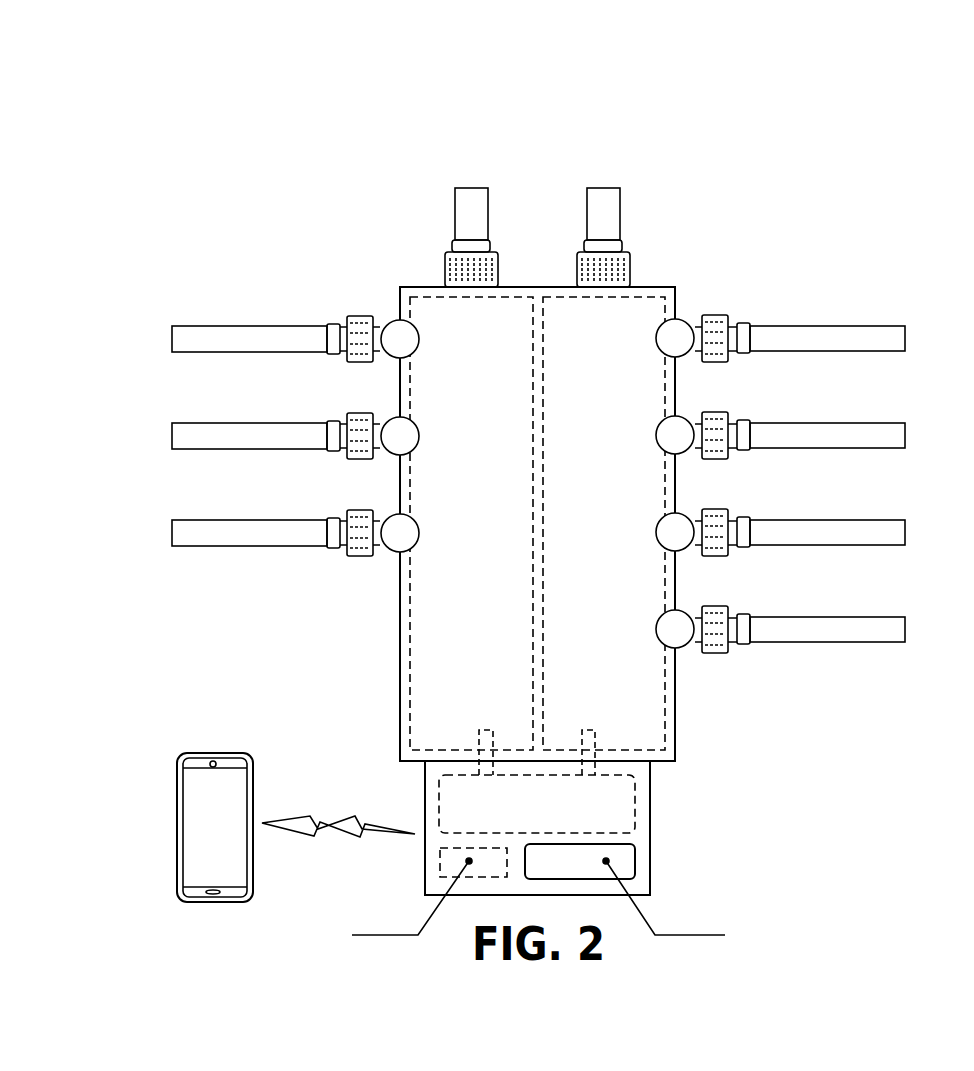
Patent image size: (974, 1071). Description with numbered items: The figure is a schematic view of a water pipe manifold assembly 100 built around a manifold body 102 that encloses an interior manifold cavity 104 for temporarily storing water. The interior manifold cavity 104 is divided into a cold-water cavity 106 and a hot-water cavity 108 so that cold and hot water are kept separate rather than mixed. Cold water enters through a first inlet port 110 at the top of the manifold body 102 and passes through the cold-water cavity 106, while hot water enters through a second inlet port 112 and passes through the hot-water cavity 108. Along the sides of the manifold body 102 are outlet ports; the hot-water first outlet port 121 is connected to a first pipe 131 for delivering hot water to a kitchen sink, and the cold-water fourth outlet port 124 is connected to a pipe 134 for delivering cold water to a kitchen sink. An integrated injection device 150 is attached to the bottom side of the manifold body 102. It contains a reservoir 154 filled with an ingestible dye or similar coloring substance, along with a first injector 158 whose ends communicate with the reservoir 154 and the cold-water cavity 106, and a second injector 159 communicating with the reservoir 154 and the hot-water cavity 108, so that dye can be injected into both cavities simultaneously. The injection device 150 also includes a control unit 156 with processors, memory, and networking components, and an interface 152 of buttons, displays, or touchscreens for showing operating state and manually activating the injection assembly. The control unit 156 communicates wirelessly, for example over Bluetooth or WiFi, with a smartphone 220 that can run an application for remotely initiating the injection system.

The manifold assembly 100 is at (298, 128).
The manifold body 102 is at (675, 712).
The interior manifold cavity 104 is at (414, 523).
The cold-water cavity 106 is at (622, 693).
The hot-water cavity 108 is at (460, 677).
The first inlet port 110 is at (630, 268).
The second inlet port 112 is at (445, 268).
The first outlet port 121 is at (420, 337).
The fourth outlet port 124 is at (655, 340).
The first pipe 131 is at (263, 326).
The pipe 134 is at (837, 325).
The injection device 150 is at (650, 823).
The interface 152 is at (635, 860).
The reservoir 154 is at (439, 805).
The control unit 156 is at (440, 862).
The first injector 158 is at (590, 723).
The second injector 159 is at (485, 723).
The smartphone 220 is at (218, 753).